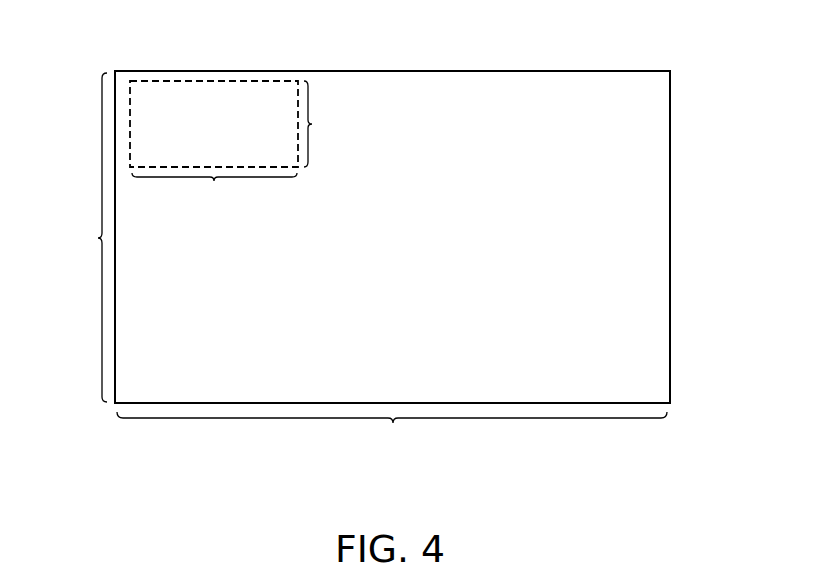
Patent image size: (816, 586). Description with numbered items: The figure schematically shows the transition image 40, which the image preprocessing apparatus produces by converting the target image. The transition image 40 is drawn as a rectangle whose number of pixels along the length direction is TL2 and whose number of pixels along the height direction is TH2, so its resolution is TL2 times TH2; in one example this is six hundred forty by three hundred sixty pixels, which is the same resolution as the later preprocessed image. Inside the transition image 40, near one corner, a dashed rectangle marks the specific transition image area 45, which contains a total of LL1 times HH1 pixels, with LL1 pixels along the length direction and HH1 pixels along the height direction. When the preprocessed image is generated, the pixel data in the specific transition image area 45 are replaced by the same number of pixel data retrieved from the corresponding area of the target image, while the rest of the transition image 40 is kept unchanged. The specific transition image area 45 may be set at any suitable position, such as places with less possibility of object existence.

The transition image 40 is at (670, 240).
The specific transition image area 45 is at (210, 87).
The amount of pixel along the height direction of the transition image TH2 is at (69, 237).
The amount of pixel along the length direction of the transition image TL2 is at (392, 436).
The amount of pixel along the height direction of the specific area HH1 is at (341, 124).
The amount of pixel along the length direction of the specific area LL1 is at (214, 198).